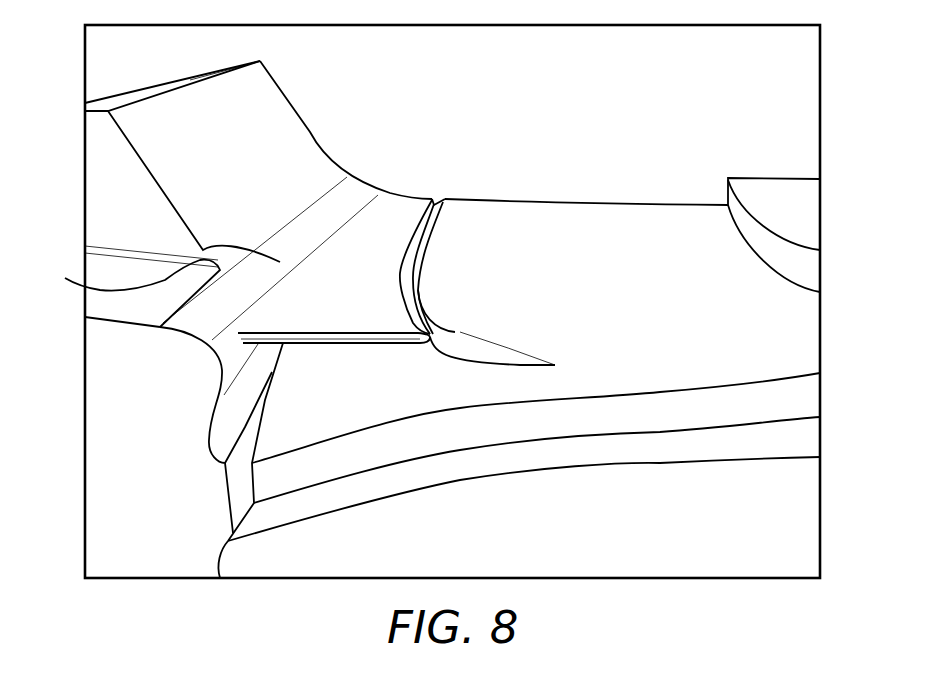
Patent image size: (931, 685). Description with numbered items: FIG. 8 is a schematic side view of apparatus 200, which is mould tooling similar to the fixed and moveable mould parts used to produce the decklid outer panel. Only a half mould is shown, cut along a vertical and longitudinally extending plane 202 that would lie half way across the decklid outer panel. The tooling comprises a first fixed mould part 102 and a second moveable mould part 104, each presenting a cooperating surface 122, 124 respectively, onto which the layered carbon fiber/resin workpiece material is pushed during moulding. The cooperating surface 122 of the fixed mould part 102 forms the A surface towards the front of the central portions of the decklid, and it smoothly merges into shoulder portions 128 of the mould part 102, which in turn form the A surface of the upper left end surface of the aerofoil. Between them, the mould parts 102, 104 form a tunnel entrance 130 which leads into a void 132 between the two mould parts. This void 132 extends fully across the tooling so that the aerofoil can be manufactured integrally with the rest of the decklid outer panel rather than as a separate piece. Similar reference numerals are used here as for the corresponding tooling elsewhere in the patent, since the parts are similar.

The first fixed mould part 102 is at (748, 330).
The second moveable mould part 104 is at (153, 143).
The cooperating surface 122 is at (677, 277).
The cooperating surface 124 is at (227, 170).
The shoulder portions 128 is at (347, 400).
The tunnel entrance 130 is at (300, 363).
The void 132 is at (403, 349).
The apparatus 200 is at (420, 163).
The vertical and longitudinally extending plane 202 is at (313, 137).